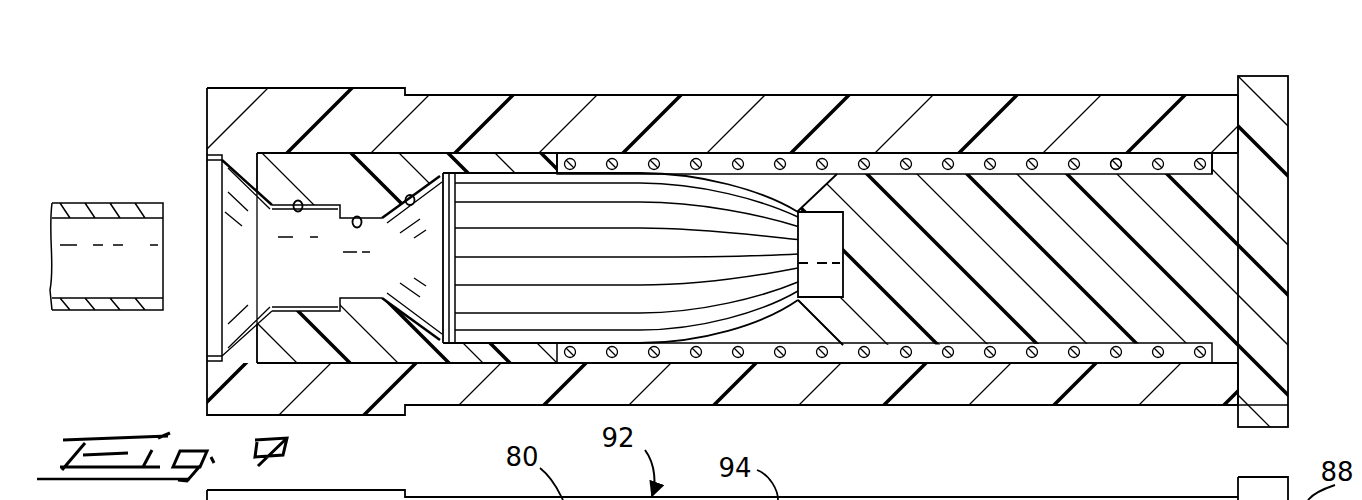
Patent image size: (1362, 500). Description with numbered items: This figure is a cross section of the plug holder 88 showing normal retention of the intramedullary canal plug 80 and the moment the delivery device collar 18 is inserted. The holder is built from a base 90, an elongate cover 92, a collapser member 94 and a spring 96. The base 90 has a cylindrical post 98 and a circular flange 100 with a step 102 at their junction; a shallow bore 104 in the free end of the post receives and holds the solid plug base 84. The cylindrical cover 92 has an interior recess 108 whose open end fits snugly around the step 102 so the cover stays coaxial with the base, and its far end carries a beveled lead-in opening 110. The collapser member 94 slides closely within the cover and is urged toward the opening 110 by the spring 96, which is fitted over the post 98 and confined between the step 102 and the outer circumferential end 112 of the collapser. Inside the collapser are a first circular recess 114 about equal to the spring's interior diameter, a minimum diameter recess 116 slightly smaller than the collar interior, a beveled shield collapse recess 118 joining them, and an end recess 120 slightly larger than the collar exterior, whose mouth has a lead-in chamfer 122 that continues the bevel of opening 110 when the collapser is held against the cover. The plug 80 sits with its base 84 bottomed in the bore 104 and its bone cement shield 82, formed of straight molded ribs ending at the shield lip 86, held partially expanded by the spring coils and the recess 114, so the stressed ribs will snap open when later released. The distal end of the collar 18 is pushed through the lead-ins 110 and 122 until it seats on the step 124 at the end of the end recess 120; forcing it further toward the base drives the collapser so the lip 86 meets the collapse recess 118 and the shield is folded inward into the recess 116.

The collar 18 is at (85, 212).
The intramedullary canal plug 80 is at (633, 170).
The bone cement shield 82 is at (725, 220).
The plug base 84 is at (825, 232).
The shield lip 86 is at (455, 265).
The plug holder 88 is at (970, 67).
The plug holder base 90 is at (1292, 180).
The cover 92 is at (1072, 87).
The collapser member 94 is at (353, 218).
The spring 96 is at (1121, 146).
The cylindrical post 98 is at (1043, 322).
The circular flange 100 is at (1280, 407).
The step 102 is at (1218, 157).
The shallow bore 104 is at (817, 300).
The cylindrical interior recess 108 is at (883, 158).
The beveled lead-in opening 110 is at (212, 180).
The outer circumferential end 112 is at (558, 172).
The first circular recess 114 is at (483, 172).
The minimum diameter recess 116 is at (322, 150).
The beveled shield collapse recess 118 is at (405, 198).
The end recess 120 is at (294, 203).
The lead-in chamfer 122 is at (270, 313).
The step 124 is at (333, 302).